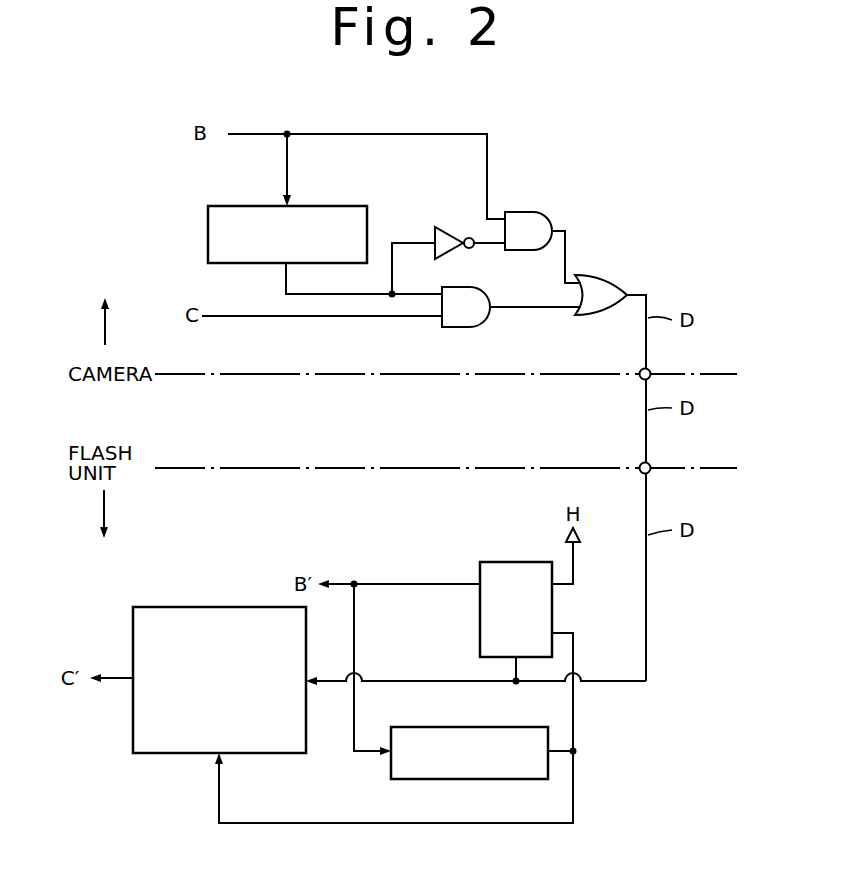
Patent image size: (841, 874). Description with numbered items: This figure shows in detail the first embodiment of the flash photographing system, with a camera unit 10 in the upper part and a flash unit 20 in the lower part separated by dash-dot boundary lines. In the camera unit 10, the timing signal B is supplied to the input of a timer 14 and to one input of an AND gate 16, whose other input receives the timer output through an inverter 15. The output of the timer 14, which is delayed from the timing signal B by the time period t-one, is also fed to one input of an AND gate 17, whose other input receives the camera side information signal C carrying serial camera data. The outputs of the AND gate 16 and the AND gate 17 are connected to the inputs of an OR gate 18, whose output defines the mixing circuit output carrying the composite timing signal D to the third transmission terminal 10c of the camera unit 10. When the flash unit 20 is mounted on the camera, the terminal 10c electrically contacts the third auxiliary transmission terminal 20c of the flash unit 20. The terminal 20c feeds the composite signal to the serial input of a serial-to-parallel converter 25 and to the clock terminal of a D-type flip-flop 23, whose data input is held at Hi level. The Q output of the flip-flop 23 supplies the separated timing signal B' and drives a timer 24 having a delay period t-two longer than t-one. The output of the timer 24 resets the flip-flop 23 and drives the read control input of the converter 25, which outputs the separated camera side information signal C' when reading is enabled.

The camera unit 10 is at (461, 375).
The third transmission terminal 10c is at (651, 370).
The timer 14 is at (338, 206).
The inverter 15 is at (456, 227).
The AND gate 16 is at (534, 211).
The AND gate 17 is at (484, 290).
The OR gate 18 is at (610, 276).
The flash unit 20 is at (462, 469).
The third auxiliary transmission terminal 20c is at (651, 464).
The flip-flop 23 is at (520, 562).
The timer 24 is at (517, 727).
The serial-to-parallel converter 25 is at (306, 719).